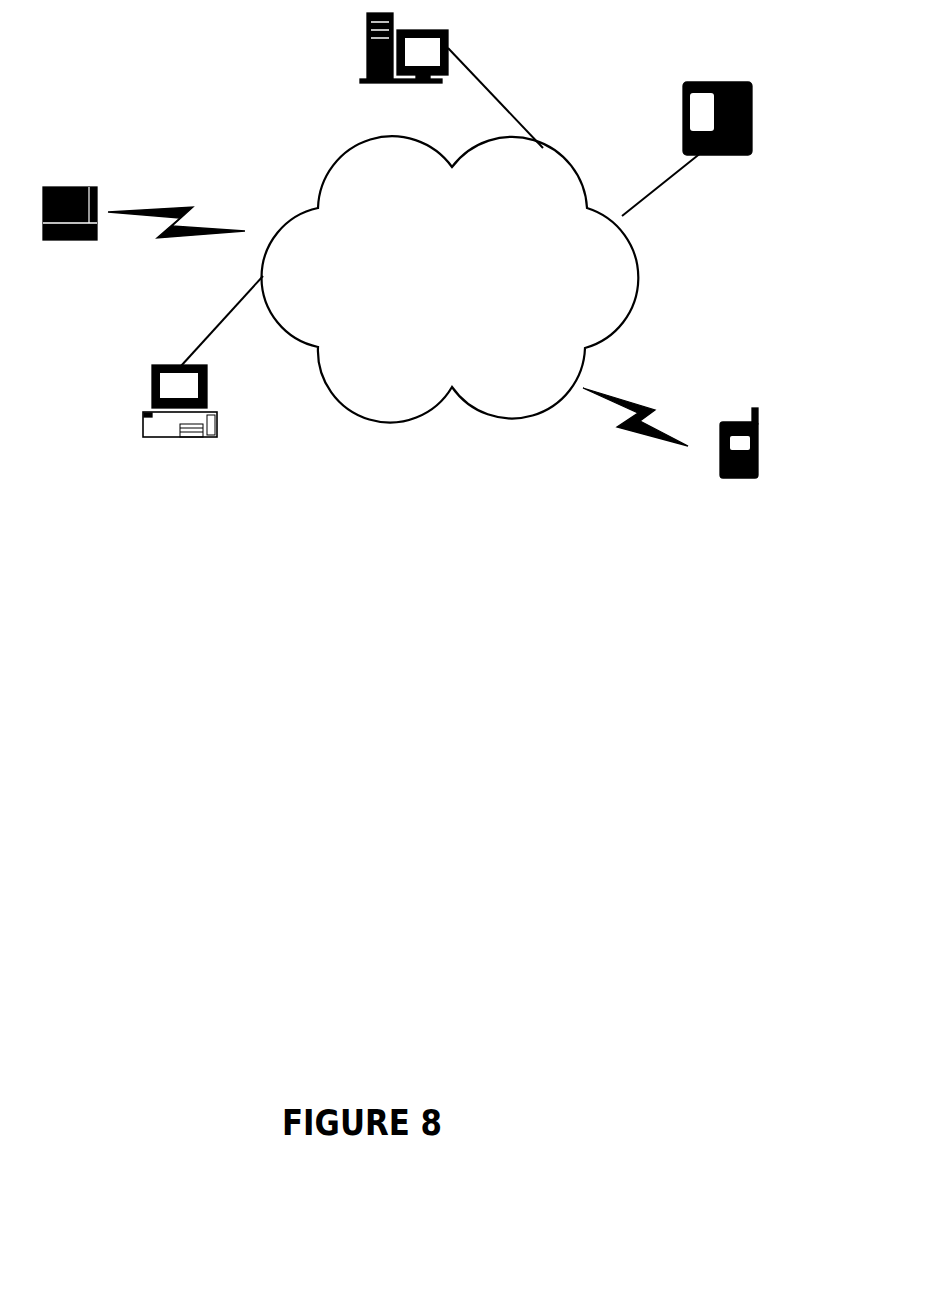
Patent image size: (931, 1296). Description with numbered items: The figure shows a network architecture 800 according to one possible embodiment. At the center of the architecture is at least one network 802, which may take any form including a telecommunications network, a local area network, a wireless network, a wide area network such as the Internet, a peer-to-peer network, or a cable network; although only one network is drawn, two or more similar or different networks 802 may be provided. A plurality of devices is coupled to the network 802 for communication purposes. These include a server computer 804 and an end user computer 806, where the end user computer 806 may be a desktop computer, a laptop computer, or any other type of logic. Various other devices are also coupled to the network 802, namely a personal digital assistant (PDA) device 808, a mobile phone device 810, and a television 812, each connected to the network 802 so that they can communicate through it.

The network architecture 800 is at (362, 703).
The network 802 is at (507, 420).
The server computer 804 is at (367, 50).
The end user computer 806 is at (143, 420).
The personal digital assistant (PDA) device 808 is at (72, 187).
The mobile phone device 810 is at (718, 428).
The television 812 is at (697, 78).